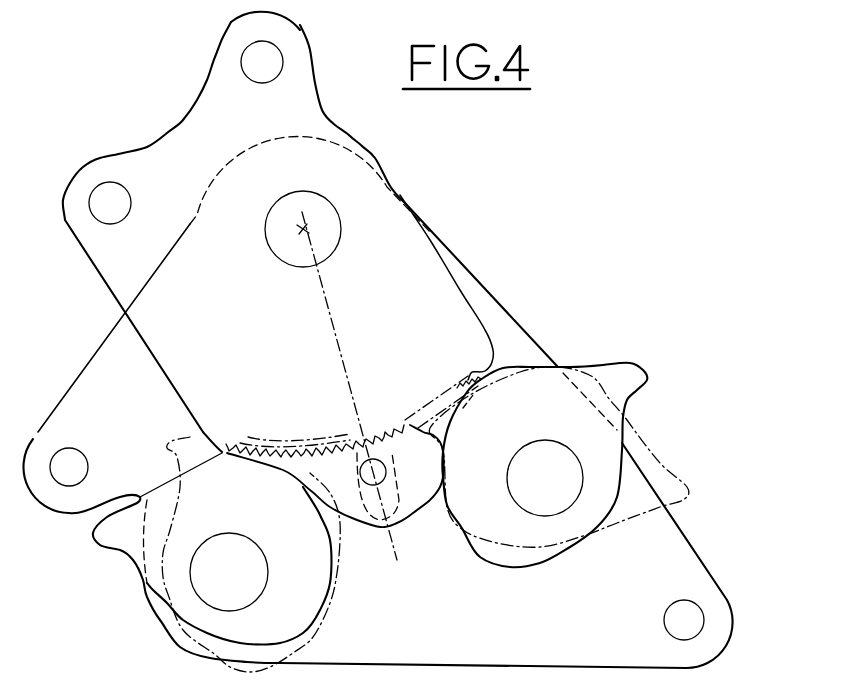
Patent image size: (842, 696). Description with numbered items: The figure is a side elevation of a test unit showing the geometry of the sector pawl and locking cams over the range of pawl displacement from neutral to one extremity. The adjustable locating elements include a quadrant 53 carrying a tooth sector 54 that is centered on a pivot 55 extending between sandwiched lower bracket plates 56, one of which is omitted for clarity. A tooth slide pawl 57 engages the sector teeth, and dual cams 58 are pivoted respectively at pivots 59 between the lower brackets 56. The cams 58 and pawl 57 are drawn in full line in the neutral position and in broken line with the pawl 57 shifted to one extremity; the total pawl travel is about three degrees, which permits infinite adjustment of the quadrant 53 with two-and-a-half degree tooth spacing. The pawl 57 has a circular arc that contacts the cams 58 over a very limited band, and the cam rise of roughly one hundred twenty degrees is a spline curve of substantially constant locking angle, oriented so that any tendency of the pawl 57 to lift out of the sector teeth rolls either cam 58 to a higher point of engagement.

The quadrant 53 is at (330, 93).
The tooth sector 54 is at (510, 372).
The pivot 55 is at (303, 229).
The lower bracket plates 56 is at (673, 548).
The tooth slide pawl 57 is at (413, 500).
The dual cams 58 is at (497, 562).
The cam pivots 59 is at (548, 478).